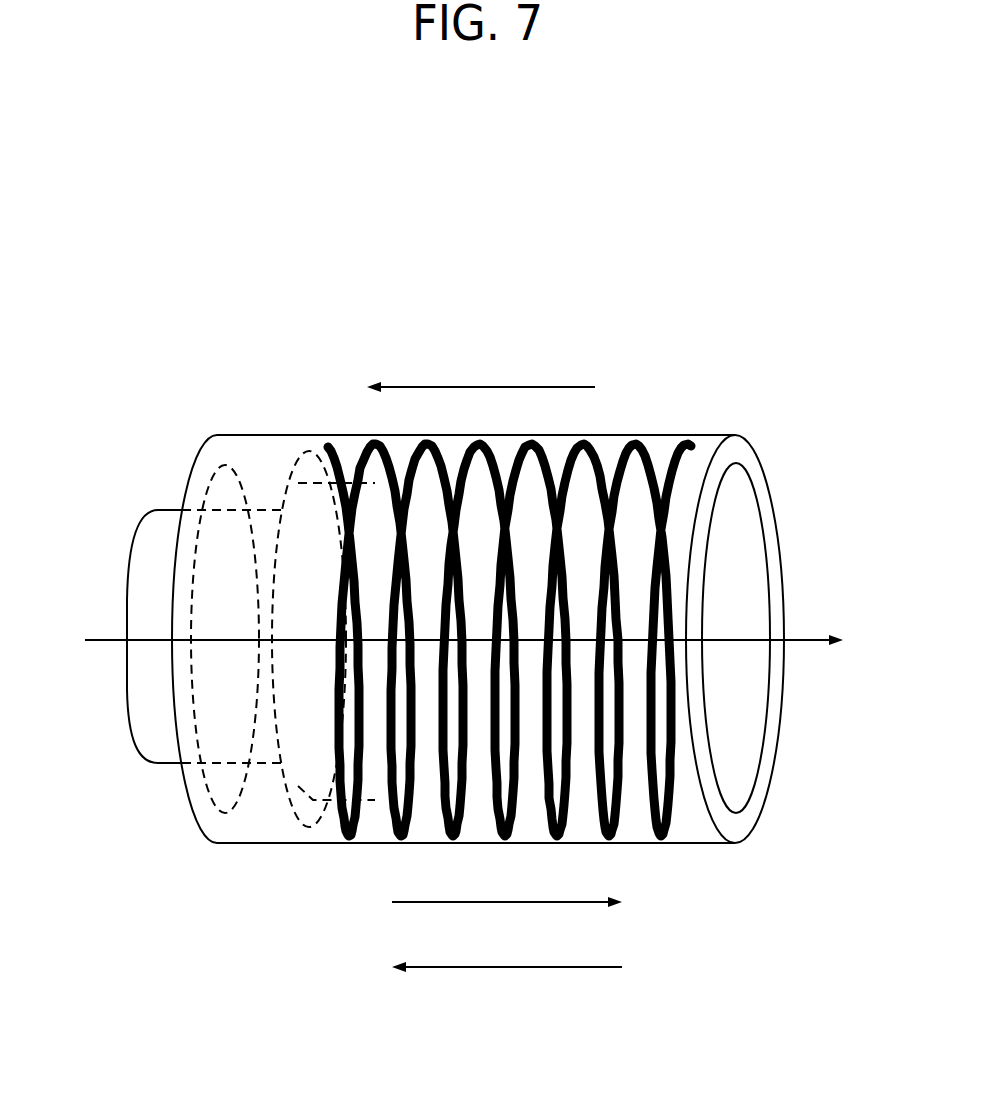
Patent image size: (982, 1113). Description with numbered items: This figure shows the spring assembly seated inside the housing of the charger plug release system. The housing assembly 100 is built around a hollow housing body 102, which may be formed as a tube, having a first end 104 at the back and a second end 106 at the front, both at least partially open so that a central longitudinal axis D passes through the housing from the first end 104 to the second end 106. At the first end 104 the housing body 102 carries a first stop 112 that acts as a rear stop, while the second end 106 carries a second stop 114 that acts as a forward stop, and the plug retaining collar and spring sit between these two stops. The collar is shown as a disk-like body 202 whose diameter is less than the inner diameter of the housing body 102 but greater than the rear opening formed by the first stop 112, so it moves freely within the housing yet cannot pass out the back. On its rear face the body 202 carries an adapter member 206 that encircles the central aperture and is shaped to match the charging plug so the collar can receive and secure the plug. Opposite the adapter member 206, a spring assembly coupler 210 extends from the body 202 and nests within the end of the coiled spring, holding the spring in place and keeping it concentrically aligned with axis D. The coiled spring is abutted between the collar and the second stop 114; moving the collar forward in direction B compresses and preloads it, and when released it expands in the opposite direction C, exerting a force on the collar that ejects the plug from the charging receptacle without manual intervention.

The housing assembly 100 is at (683, 345).
The housing body 102 is at (634, 434).
The first end 104 is at (193, 470).
The second end 106 is at (773, 535).
The first stop 112 is at (205, 778).
The second stop 114 is at (760, 703).
The body 202 is at (292, 472).
The adapter member 206 is at (127, 583).
The spring assembly coupler 210 is at (313, 755).